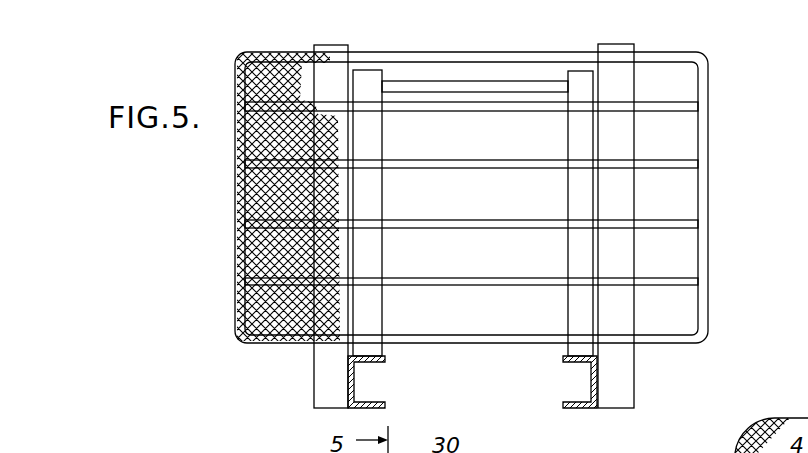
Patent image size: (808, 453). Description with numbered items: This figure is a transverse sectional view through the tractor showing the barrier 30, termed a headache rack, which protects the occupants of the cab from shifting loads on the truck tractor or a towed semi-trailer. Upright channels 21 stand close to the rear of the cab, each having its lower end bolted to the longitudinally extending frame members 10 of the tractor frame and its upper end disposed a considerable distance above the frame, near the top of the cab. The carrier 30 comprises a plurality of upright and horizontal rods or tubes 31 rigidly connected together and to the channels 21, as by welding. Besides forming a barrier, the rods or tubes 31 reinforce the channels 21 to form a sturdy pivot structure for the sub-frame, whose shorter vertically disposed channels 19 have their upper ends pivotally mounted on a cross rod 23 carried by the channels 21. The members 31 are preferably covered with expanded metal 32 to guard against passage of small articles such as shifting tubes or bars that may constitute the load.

The frame member 10 is at (384, 400).
The vertically disposed channel 19 is at (372, 197).
The upright channel 21 is at (314, 380).
The cross rod 23 is at (412, 85).
The barrier 30 is at (716, 90).
The rods or tubes 31 is at (497, 108).
The expanded metal 32 is at (247, 262).